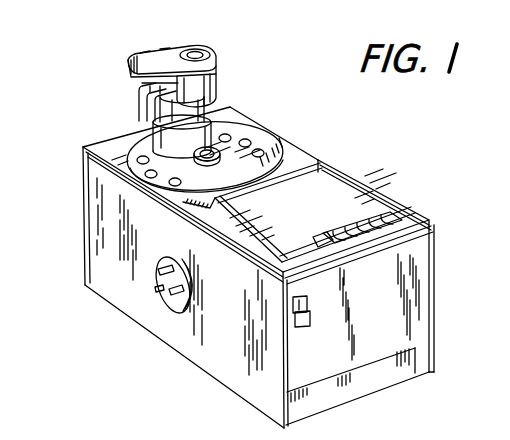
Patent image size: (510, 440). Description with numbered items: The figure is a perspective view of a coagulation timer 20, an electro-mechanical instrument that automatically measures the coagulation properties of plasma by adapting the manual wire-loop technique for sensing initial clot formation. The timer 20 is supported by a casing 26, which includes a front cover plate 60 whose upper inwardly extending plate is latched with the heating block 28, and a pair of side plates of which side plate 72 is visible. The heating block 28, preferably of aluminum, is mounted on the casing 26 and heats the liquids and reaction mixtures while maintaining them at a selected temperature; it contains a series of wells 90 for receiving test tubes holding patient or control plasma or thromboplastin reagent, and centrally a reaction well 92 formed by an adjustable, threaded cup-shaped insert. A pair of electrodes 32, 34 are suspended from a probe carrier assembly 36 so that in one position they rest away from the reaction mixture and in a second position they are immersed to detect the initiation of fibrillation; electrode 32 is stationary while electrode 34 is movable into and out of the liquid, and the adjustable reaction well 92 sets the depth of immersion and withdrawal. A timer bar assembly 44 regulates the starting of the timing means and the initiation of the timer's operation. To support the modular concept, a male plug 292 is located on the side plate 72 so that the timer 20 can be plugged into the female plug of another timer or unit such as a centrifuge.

The coagulation timer 20 is at (94, 111).
The casing 26 is at (438, 308).
The heating block 28 is at (318, 155).
The electrode 32 is at (157, 116).
The electrode 34 is at (134, 111).
The probe carrier assembly 36 is at (220, 39).
The timer bar assembly 44 is at (262, 250).
The front cover plate 60 is at (318, 372).
The side plate 72 is at (228, 382).
The wells 90 is at (168, 181).
The reaction well 92 is at (210, 161).
The male plug 292 is at (169, 309).